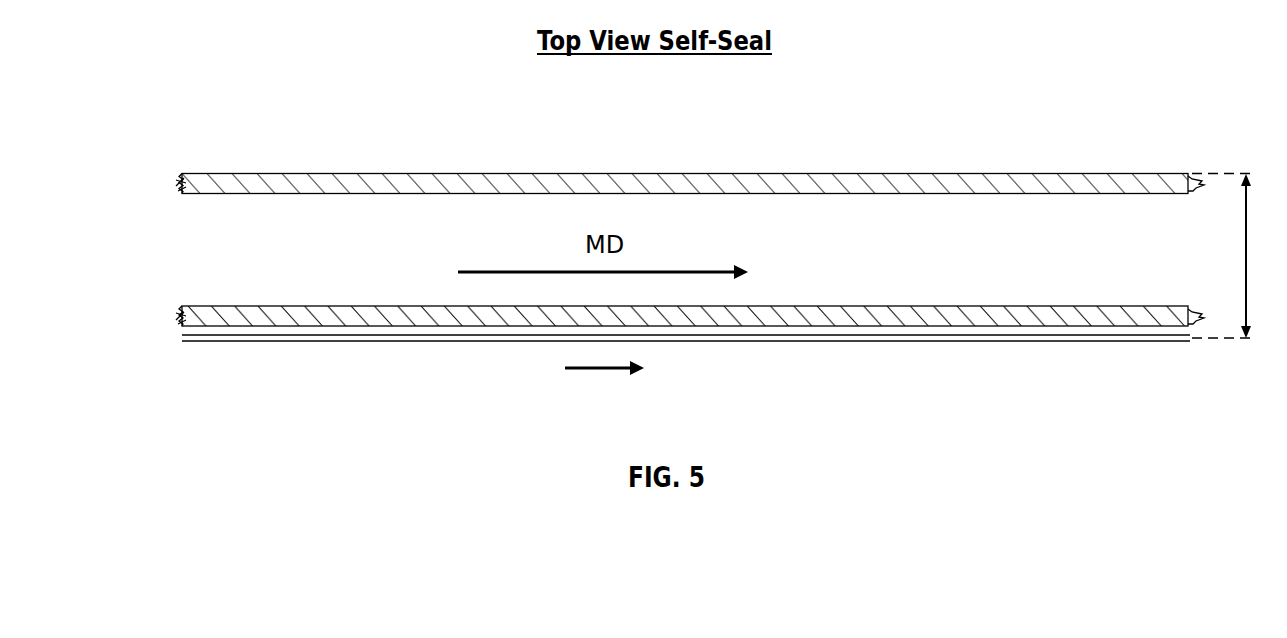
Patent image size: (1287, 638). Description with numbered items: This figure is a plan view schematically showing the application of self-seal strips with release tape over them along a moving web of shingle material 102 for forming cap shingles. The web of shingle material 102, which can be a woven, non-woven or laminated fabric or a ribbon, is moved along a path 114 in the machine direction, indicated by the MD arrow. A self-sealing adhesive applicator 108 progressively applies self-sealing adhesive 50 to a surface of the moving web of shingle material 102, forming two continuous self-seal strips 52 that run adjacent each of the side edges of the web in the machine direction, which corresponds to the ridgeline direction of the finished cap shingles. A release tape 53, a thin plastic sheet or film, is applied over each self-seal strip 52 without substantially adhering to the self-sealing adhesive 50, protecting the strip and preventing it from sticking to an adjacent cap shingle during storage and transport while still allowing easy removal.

The self-sealing adhesive 50 is at (186, 202).
The self-seal strip 52 is at (708, 173).
The release tape 53 is at (178, 185).
The web of shingle material 102 is at (1098, 225).
The self-sealing adhesive applicator 108 is at (1008, 108).
The path 114 is at (592, 371).